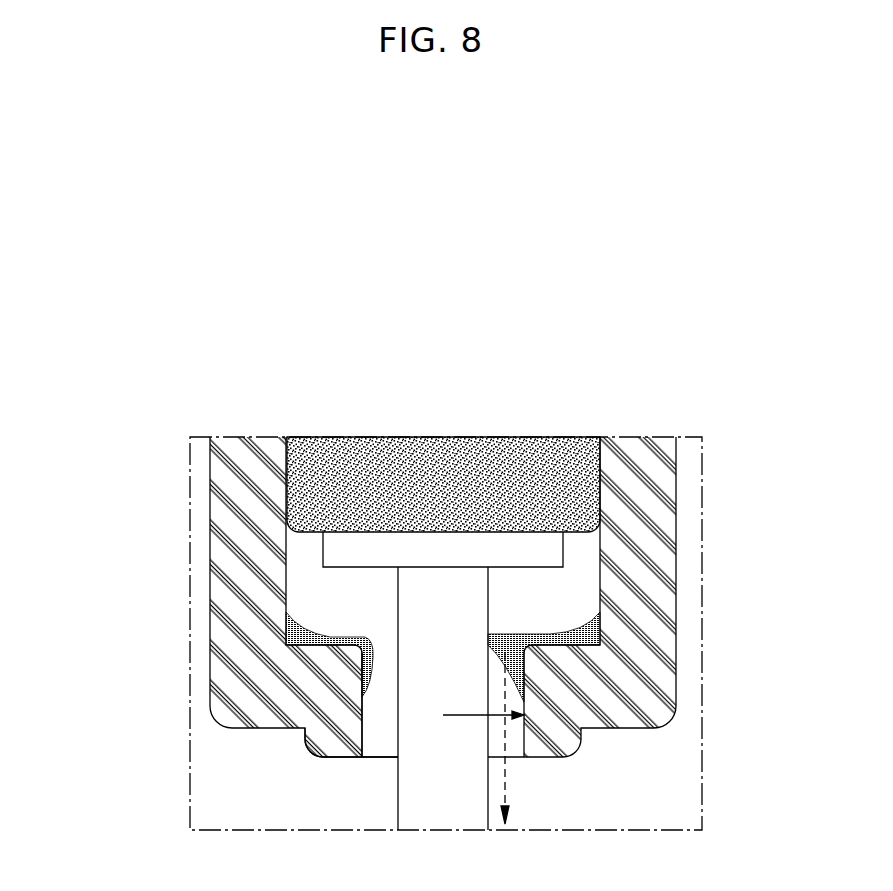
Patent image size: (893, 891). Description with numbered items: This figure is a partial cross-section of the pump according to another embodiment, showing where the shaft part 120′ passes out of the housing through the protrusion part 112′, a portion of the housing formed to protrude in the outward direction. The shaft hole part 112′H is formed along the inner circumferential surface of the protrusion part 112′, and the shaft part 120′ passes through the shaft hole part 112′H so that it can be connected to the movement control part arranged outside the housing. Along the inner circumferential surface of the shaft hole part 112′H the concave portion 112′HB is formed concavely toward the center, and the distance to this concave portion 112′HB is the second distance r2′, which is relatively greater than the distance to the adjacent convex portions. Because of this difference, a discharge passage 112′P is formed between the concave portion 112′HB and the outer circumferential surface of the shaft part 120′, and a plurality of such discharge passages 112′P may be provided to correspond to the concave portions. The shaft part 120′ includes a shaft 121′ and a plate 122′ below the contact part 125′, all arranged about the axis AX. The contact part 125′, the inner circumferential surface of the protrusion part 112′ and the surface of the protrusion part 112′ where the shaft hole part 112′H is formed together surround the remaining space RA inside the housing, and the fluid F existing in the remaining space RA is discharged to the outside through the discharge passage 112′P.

The protrusion part 112′ is at (660, 682).
The discharge passage 112′P is at (388, 737).
The shaft hole part 112′H is at (363, 717).
The concave portion 112′HB is at (346, 820).
The shaft part 120′ is at (100, 485).
The shaft 121′ is at (418, 598).
The plate 122′ is at (545, 550).
The contact part 125′ is at (300, 479).
The axis AX is at (443, 855).
The remaining space RA is at (557, 612).
The fluid F is at (592, 633).
The second distance r2′ is at (467, 715).